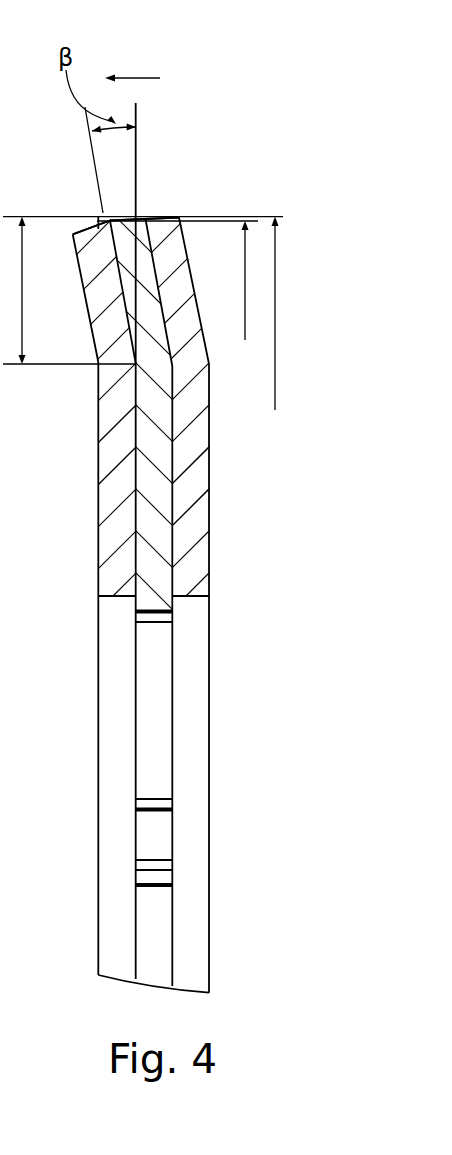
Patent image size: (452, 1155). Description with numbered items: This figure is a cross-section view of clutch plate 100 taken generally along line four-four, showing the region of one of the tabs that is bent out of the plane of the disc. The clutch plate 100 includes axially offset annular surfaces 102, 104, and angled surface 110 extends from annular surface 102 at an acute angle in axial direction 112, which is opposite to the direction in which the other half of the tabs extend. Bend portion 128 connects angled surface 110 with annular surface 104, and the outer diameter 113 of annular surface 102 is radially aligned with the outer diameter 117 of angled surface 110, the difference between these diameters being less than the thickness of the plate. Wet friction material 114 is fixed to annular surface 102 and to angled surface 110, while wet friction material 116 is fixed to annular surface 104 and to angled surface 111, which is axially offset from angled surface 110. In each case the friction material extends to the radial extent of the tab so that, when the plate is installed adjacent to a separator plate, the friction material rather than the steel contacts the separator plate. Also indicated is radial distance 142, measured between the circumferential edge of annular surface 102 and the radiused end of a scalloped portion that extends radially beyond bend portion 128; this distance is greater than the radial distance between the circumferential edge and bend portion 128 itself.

The clutch plate 100 is at (165, 165).
The annular surface 102 is at (133, 512).
The annular surface 104 is at (175, 510).
The angled surface 110 is at (123, 305).
The angled surface 111 is at (153, 268).
The axial direction 112 is at (132, 78).
The outer diameter of annular surface 113 is at (246, 284).
The wet friction material 114 is at (107, 460).
The wet friction material 116 is at (190, 475).
The outer diameter of angled surface 117 is at (275, 367).
The bend portion 128 is at (127, 368).
The radial distance 142 is at (22, 280).